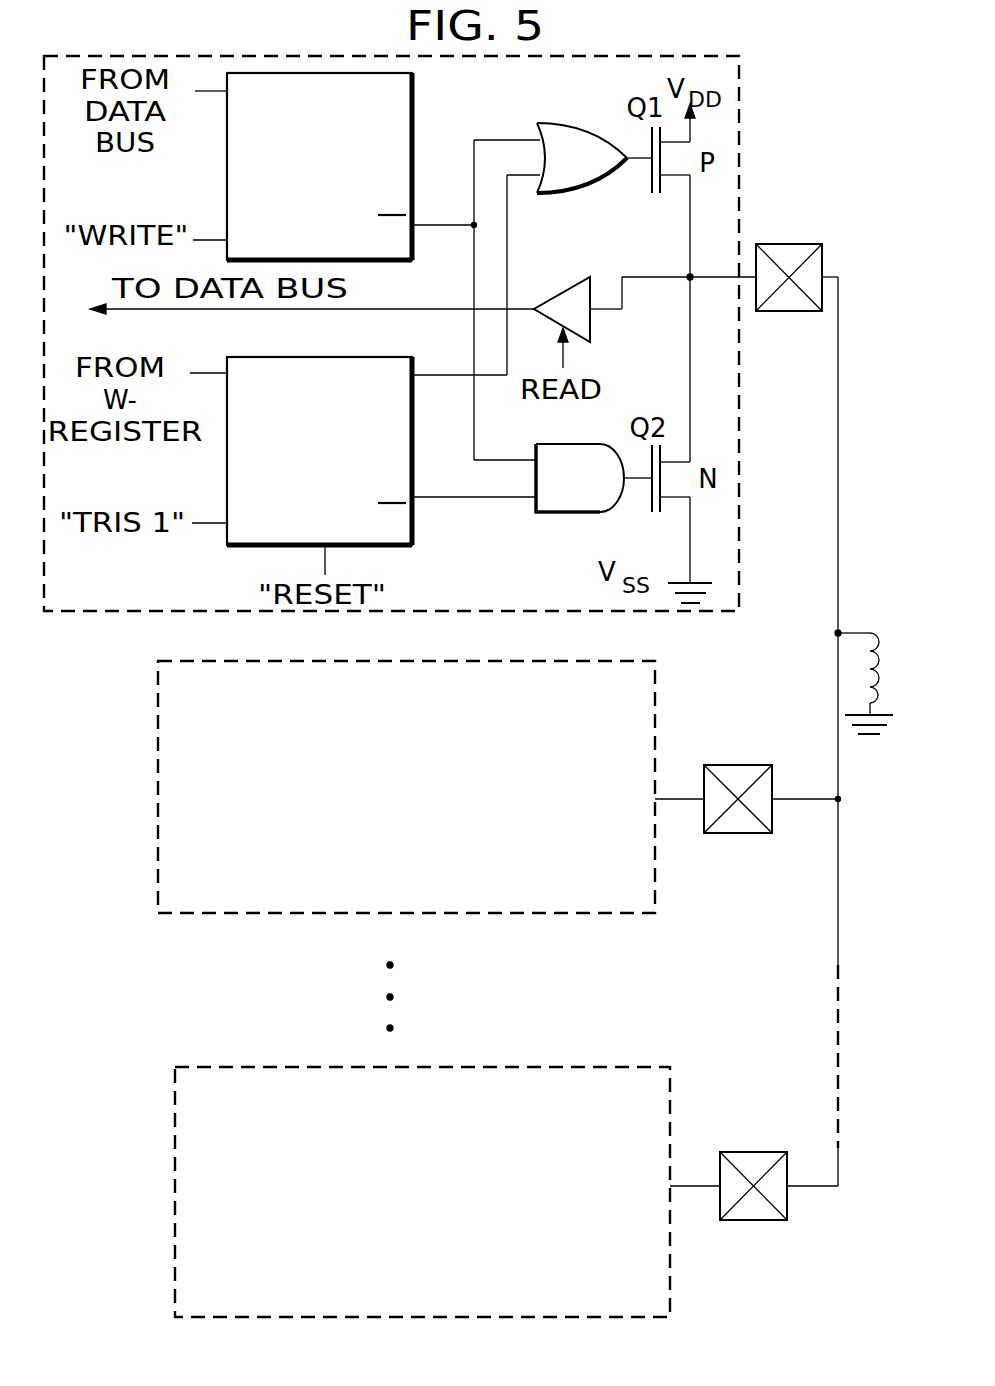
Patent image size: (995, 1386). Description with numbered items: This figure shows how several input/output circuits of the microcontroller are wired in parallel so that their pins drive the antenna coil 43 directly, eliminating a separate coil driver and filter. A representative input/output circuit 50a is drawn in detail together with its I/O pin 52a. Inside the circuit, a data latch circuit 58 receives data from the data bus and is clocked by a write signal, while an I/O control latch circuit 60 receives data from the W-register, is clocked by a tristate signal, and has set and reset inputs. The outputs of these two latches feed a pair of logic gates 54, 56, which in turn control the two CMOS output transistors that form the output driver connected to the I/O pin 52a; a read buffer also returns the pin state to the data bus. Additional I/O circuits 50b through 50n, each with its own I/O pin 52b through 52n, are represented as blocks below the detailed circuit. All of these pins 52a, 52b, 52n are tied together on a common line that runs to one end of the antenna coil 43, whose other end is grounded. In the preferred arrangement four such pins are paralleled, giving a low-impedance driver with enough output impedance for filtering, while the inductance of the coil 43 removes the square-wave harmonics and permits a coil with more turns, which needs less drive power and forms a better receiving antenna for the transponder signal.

The input/output (I/O) circuit 50a is at (740, 108).
The I/O circuit 50b is at (585, 915).
The I/O circuit 50n is at (470, 1067).
The I/O pin 52a is at (789, 311).
The I/O pin 52b is at (738, 833).
The I/O pin 52n is at (753, 1220).
The logic gate 54 is at (556, 122).
The logic gate 56 is at (568, 512).
The data latch circuit 58 is at (412, 130).
The I/O control latch circuit 60 is at (412, 522).
The antenna coil 43 is at (870, 628).